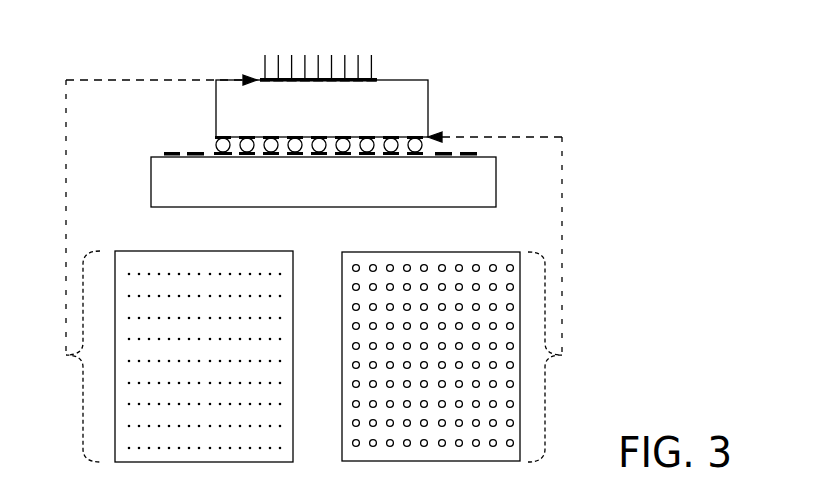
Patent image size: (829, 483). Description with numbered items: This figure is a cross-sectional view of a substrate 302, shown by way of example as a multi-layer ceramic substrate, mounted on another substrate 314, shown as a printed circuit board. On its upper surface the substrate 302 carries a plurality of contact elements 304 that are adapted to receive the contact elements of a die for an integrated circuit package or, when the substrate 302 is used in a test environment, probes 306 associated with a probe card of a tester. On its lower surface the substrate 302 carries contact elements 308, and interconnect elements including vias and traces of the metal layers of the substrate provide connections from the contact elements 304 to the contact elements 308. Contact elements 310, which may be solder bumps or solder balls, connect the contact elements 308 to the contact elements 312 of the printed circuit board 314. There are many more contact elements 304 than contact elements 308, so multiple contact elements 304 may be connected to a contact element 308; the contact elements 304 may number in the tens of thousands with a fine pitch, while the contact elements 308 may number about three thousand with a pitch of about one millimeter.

The substrate 302 is at (428, 96).
The contact elements 304 is at (372, 80).
The probes 306 is at (372, 77).
The contact elements 308 is at (431, 134).
The contact elements 310 is at (216, 150).
The contact elements 312 is at (166, 153).
The substrate 314 is at (496, 185).